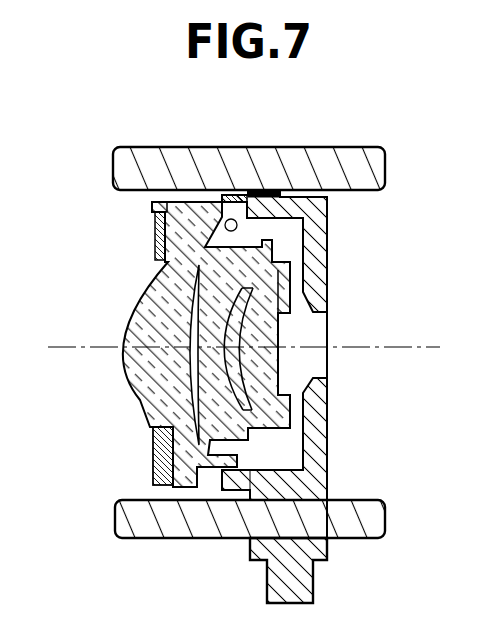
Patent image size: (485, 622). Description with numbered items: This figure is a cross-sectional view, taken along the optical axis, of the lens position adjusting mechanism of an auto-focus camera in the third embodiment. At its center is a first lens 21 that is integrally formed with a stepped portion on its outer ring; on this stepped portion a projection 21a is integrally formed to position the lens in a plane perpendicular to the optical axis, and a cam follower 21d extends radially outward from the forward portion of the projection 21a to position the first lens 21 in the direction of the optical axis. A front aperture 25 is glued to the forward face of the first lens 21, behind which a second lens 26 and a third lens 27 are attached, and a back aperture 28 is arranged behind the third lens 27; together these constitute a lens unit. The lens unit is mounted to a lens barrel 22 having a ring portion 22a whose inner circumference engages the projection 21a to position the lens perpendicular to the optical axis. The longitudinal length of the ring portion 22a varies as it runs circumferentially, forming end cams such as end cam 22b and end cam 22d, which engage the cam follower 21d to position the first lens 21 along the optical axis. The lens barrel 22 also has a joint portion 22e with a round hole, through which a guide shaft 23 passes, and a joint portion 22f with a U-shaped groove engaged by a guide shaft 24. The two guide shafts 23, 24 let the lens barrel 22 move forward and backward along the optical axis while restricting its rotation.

The first lens 21 is at (238, 301).
The projection 21a is at (252, 246).
The cam follower 21d is at (217, 218).
The lens barrel 22 is at (237, 359).
The ring portion 22a is at (262, 208).
The end cam 22b is at (222, 488).
The end cam 22d is at (245, 195).
The joint portion 22e is at (318, 550).
The joint portion 22f is at (328, 204).
The guide shaft 23 is at (162, 527).
The guide shaft 24 is at (341, 166).
The front aperture 25 is at (155, 440).
The second lens 26 is at (217, 300).
The third lens 27 is at (262, 360).
The back aperture 28 is at (302, 397).